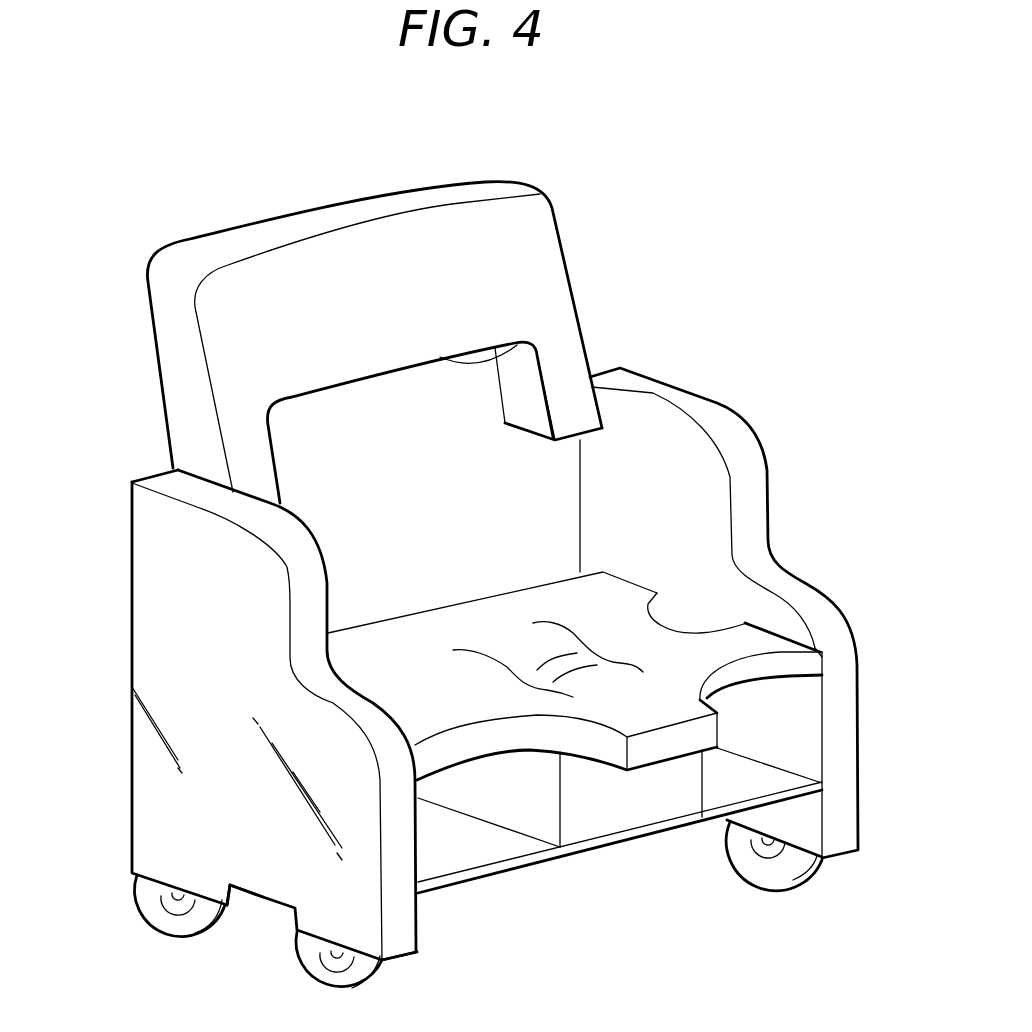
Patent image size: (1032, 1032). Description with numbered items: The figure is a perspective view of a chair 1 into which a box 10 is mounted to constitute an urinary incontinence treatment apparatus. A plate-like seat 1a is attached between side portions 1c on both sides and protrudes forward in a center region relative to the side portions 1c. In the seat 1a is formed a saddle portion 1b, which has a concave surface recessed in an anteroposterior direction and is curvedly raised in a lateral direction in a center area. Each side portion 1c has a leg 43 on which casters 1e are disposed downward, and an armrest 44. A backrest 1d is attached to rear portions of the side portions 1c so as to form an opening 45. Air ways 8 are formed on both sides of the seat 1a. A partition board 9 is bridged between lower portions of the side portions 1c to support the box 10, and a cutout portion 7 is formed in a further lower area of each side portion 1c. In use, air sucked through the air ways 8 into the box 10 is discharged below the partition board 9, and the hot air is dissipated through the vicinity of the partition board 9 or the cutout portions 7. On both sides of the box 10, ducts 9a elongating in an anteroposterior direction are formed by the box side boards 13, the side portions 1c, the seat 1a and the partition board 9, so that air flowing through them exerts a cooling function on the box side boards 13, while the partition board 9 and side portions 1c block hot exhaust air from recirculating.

The chair 1 is at (717, 372).
The seat 1a is at (762, 643).
The saddle portion 1b is at (560, 643).
The side portion 1c is at (167, 608).
The backrest 1d is at (567, 247).
The caster 1e is at (808, 877).
The cutout portion 7 is at (242, 897).
The air way 8 is at (693, 618).
The partition board 9 is at (458, 885).
The duct 9a is at (792, 712).
The box 10 is at (625, 808).
The box side board 13 is at (510, 803).
The leg 43 is at (170, 800).
The armrest 44 is at (210, 498).
The opening 45 is at (522, 343).